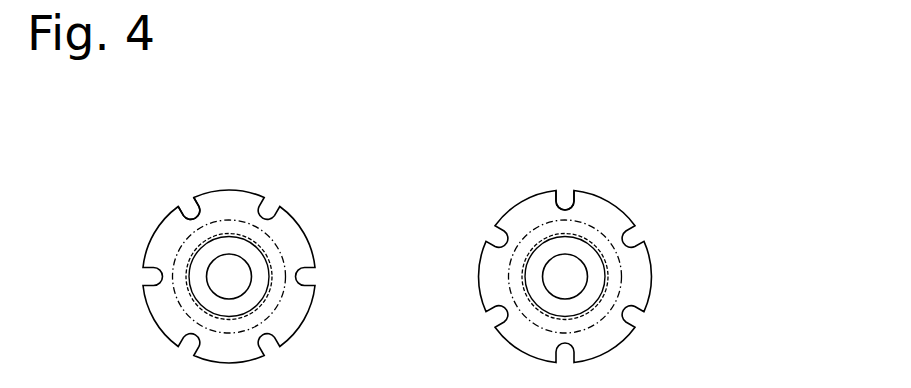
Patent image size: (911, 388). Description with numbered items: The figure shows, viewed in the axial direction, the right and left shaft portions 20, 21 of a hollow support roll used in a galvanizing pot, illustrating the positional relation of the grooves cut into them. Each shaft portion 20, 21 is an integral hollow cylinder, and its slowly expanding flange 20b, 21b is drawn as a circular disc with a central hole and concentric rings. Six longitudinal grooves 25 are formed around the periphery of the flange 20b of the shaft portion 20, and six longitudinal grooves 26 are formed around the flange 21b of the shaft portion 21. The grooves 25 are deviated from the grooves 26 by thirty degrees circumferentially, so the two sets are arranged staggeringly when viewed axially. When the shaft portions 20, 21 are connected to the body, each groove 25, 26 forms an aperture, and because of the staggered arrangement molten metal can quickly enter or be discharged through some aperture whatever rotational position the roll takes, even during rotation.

The shaft portion 20 is at (253, 245).
The flange 20b is at (231, 202).
The grooves 25 is at (189, 204).
The shaft portion 21 is at (595, 244).
The flange 21b is at (597, 210).
The grooves 26 is at (565, 206).